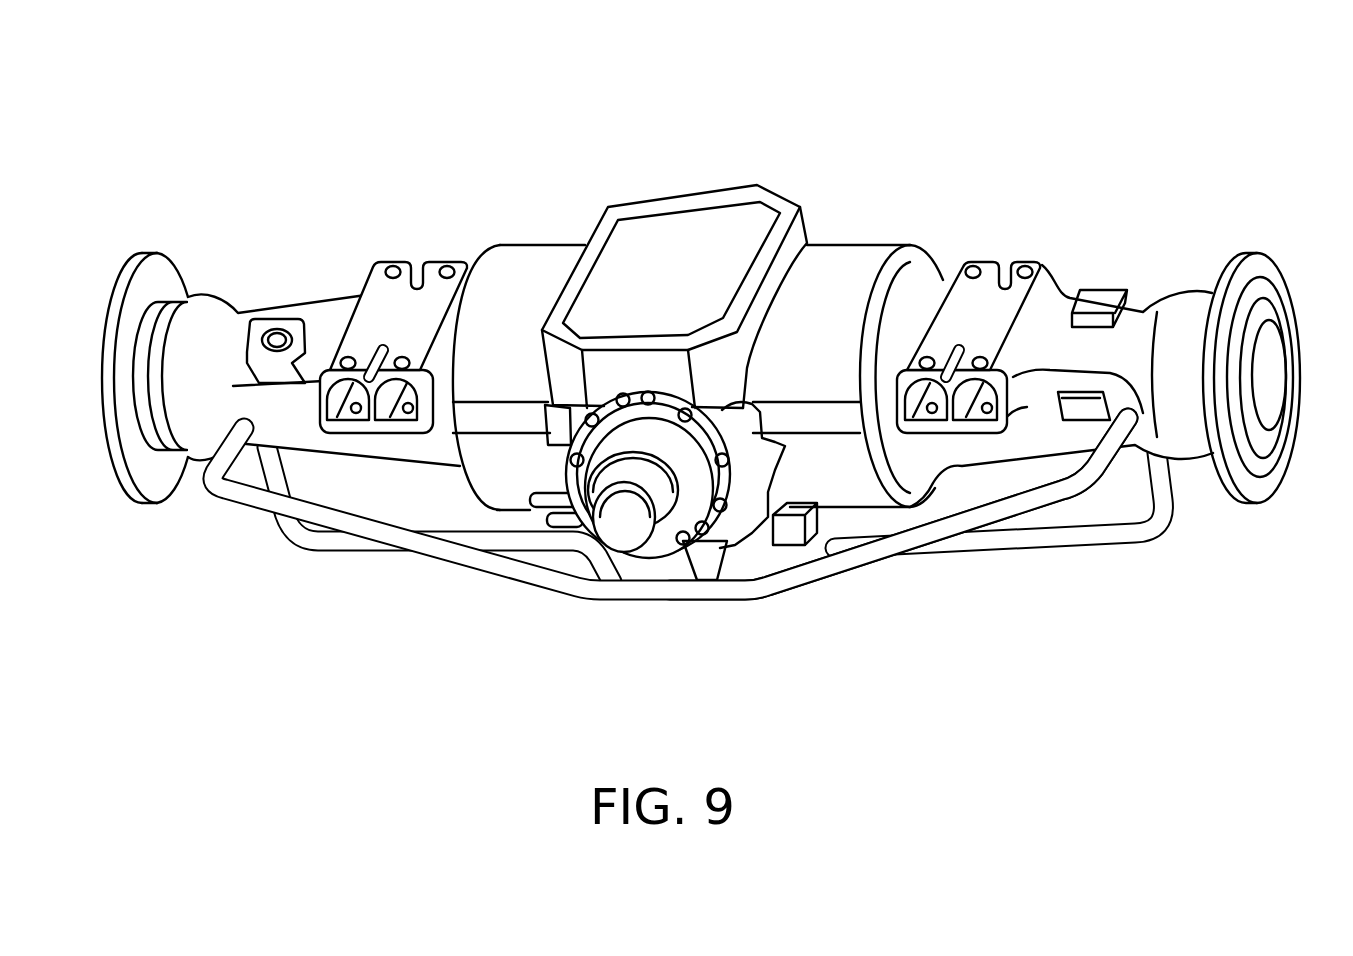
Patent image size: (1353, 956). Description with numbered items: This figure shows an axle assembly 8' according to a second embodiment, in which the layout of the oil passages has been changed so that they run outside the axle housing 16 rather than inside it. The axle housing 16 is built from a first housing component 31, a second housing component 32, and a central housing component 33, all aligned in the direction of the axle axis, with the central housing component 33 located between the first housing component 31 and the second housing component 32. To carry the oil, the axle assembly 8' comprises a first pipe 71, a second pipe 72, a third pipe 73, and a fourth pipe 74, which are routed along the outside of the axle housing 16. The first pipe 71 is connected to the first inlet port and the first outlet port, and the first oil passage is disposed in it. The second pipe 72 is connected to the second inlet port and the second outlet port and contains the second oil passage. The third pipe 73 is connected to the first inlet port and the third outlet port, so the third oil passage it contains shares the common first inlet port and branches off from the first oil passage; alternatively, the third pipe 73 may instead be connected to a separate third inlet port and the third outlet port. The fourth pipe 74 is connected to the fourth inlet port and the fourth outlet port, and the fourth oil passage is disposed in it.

The axle assembly 8' is at (701, 275).
The axle housing 16 is at (790, 172).
The first housing component 31 is at (337, 305).
The second housing component 32 is at (1146, 308).
The central housing component 33 is at (667, 228).
The first pipe 71 is at (430, 552).
The second pipe 72 is at (312, 542).
The third pipe 73 is at (853, 562).
The fourth pipe 74 is at (1032, 540).